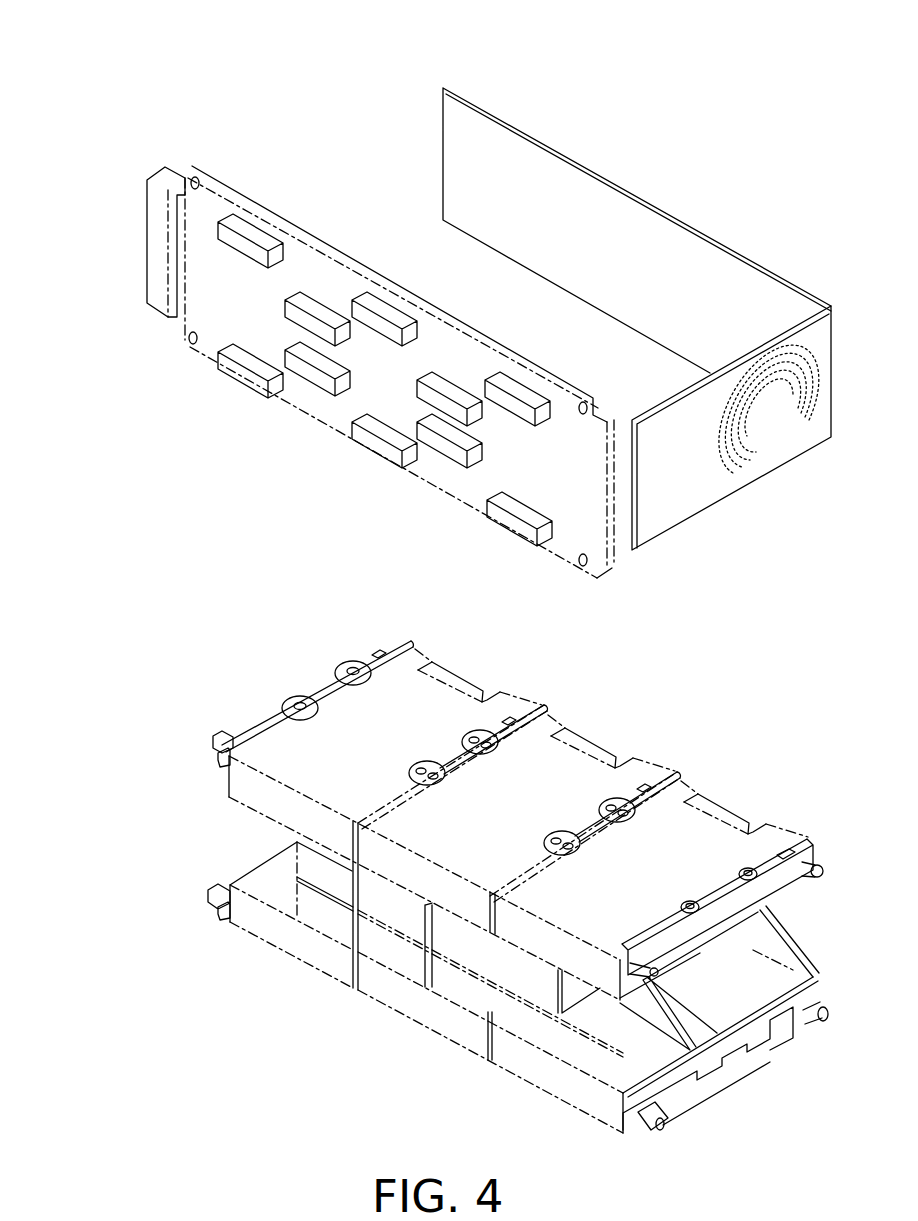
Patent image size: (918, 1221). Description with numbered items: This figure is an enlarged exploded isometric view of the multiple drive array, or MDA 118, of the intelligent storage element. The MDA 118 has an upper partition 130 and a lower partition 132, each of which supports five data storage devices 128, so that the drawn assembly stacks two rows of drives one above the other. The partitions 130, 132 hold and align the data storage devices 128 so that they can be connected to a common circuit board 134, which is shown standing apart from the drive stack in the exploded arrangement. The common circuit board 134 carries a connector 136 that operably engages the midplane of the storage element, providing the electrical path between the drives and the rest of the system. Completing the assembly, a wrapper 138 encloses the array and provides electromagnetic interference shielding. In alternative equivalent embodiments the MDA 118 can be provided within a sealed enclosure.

The MDA 118 is at (703, 87).
The data storage devices 128 is at (328, 710).
The upper partition 130 is at (793, 900).
The lower partition 132 is at (817, 982).
The common circuit board 134 is at (200, 172).
The connector 136 is at (163, 168).
The wrapper 138 is at (500, 117).